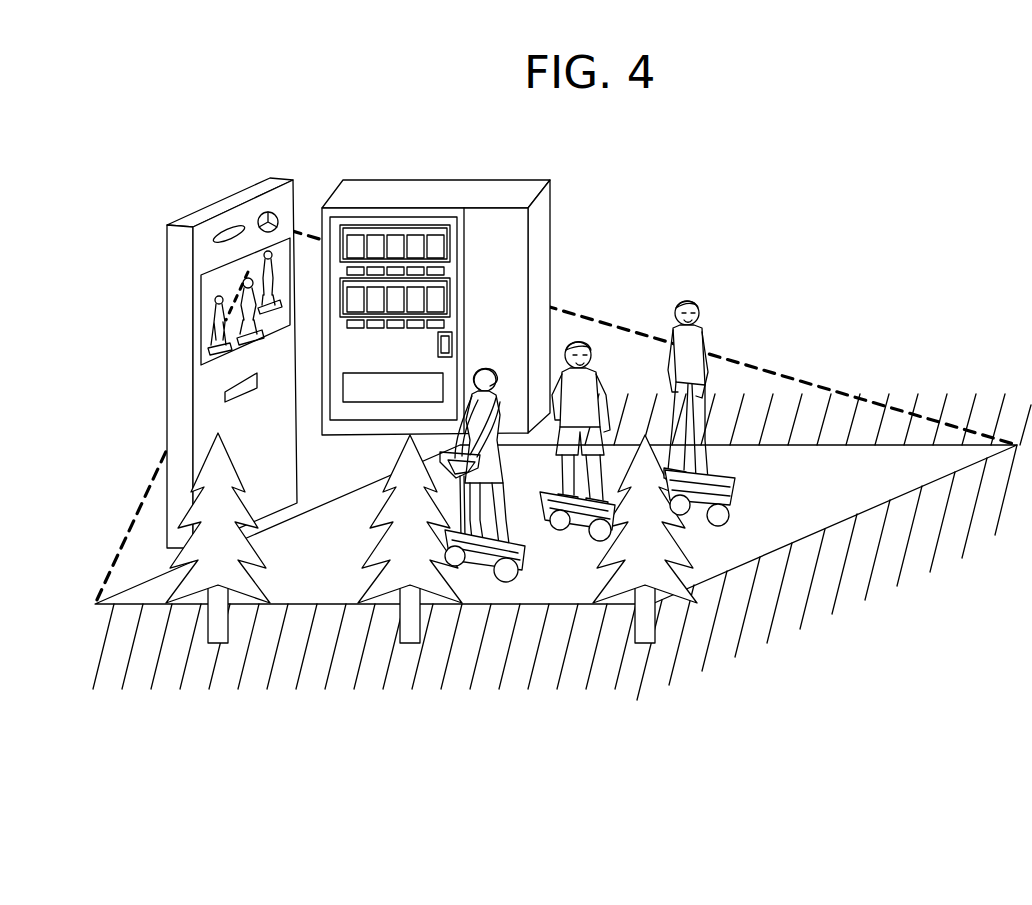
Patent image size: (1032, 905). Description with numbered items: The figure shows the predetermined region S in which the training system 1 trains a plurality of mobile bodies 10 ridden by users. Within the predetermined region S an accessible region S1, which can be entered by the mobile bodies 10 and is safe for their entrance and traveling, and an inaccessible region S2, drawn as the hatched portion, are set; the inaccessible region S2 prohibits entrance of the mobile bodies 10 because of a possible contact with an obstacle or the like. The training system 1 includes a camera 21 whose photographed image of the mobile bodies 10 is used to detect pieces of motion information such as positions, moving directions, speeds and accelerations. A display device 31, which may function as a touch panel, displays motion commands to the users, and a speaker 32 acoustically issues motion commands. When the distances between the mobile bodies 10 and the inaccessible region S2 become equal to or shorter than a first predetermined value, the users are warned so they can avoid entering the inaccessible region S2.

The training system 1 is at (201, 216).
The camera 21 is at (266, 212).
The display device 31 is at (208, 290).
The speaker 32 is at (225, 397).
The mobile body 10 is at (512, 552).
The predetermined region S is at (834, 300).
The accessible region S1 is at (889, 463).
The inaccessible region S2 is at (540, 675).